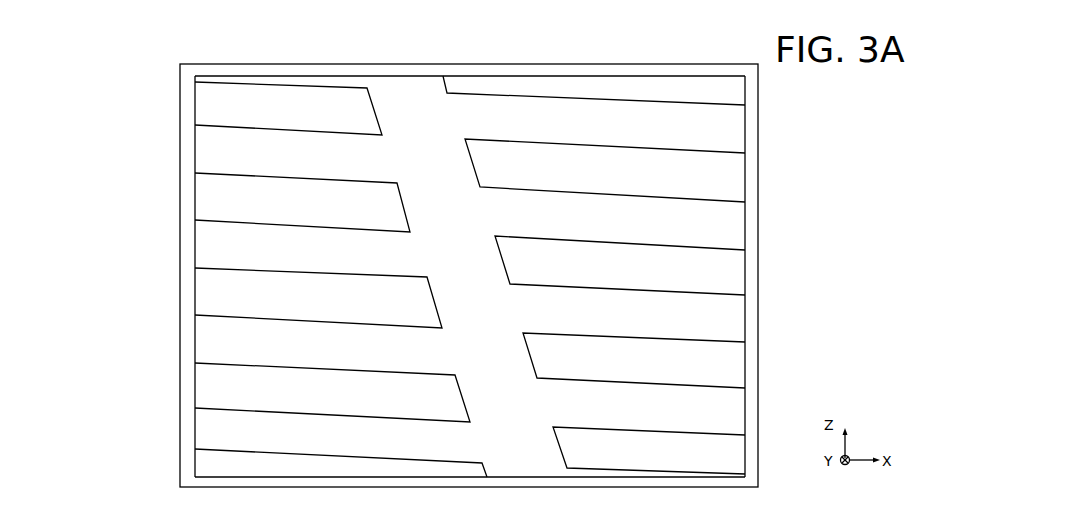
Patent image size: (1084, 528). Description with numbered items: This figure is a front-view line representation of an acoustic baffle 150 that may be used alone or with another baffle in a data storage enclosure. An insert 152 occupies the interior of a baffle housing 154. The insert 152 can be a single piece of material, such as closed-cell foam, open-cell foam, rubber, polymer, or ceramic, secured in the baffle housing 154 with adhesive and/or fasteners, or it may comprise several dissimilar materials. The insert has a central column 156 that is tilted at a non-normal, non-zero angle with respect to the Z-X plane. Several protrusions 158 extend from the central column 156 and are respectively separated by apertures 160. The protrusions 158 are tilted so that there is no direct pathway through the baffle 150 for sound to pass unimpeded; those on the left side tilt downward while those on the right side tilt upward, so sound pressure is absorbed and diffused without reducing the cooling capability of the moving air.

The acoustic baffle 150 is at (177, 56).
The insert 152 is at (393, 70).
The baffle housing 154 is at (758, 152).
The central column 156 is at (537, 475).
The protrusions 158 is at (190, 150).
The apertures 160 is at (190, 106).